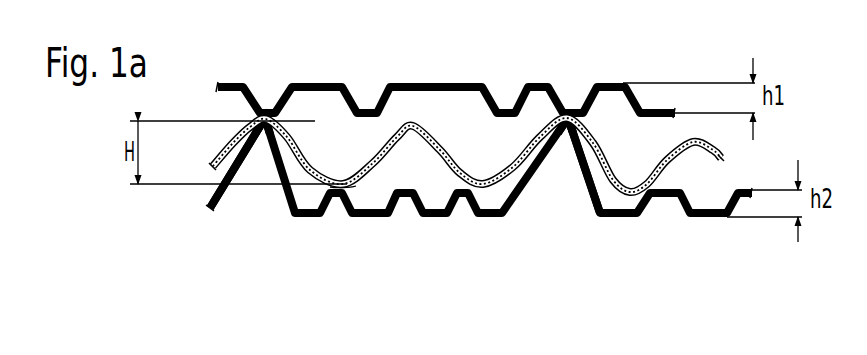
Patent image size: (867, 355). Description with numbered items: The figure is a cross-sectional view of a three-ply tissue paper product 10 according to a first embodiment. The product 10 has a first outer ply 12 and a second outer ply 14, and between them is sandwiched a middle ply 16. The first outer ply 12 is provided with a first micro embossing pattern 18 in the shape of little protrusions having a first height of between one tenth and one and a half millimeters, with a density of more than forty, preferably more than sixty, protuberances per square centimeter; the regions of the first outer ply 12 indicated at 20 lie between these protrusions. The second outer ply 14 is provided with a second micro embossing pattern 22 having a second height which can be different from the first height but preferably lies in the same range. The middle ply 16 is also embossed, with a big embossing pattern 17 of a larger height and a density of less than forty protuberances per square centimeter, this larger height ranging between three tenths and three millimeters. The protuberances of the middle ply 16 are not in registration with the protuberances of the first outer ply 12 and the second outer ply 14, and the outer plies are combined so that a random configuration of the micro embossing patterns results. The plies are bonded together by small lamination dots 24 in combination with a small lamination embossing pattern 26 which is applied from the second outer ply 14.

The product 10 is at (236, 67).
The first outer ply 12 is at (622, 78).
The second outer ply 14 is at (307, 222).
The middle ply 16 is at (371, 188).
The big embossing pattern 17 is at (437, 133).
The first micro embossing pattern 18 is at (597, 85).
The flat regions of upper sheet 20 is at (390, 76).
The second micro embossing pattern 22 is at (450, 205).
The lamination dots 24 is at (266, 114).
The lamination embossing pattern 26 is at (243, 161).